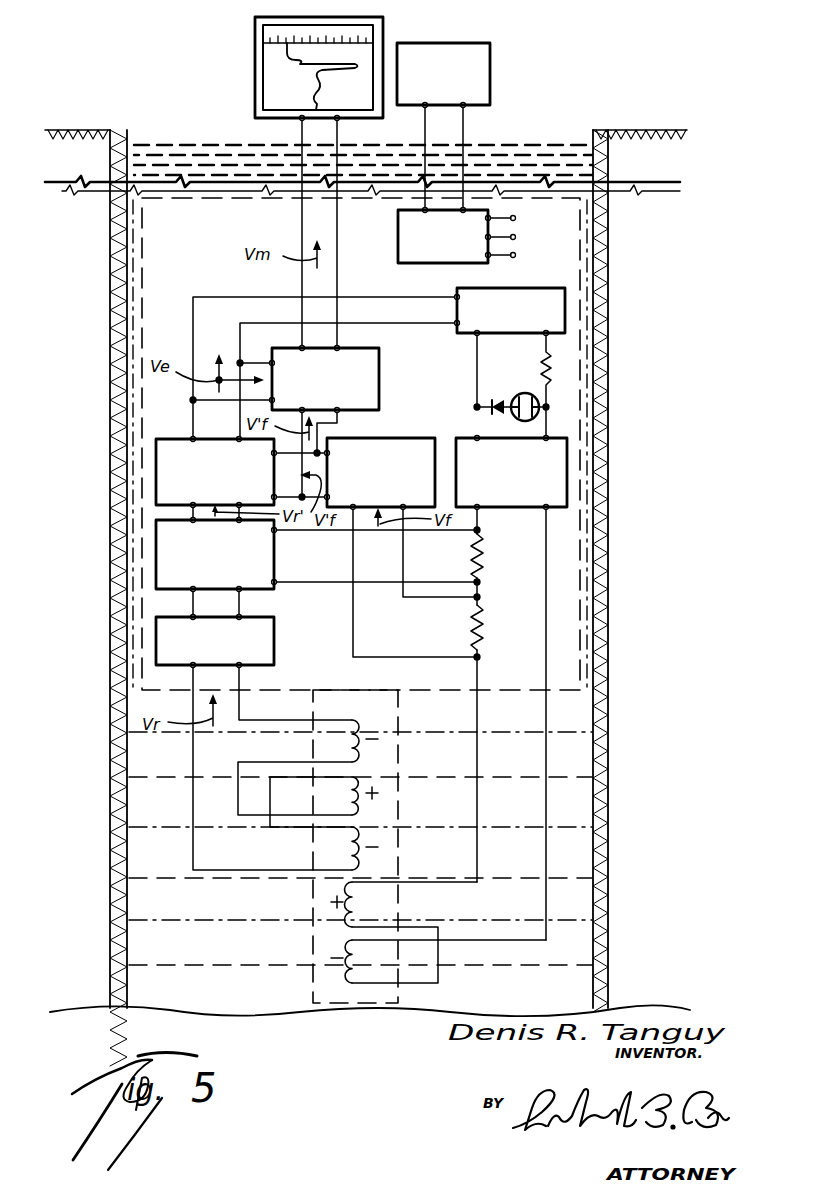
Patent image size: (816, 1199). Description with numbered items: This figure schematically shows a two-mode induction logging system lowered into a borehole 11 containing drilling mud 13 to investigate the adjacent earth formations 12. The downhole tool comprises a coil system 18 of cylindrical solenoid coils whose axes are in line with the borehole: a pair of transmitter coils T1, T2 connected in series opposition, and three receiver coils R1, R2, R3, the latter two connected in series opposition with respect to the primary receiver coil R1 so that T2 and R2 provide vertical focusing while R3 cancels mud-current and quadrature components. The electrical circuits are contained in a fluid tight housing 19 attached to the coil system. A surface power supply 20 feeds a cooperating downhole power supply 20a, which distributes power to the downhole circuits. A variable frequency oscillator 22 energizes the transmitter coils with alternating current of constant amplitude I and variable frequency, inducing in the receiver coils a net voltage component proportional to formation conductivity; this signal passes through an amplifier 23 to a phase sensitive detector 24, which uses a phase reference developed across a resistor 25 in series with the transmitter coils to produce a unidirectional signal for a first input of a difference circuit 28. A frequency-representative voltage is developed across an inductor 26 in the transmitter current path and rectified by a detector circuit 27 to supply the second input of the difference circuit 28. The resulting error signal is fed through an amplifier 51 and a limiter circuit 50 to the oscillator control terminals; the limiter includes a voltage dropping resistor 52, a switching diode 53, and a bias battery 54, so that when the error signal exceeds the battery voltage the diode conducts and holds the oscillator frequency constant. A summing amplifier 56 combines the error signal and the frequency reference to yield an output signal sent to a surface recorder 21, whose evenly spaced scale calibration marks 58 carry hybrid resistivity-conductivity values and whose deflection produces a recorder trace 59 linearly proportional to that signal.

The borehole 11 is at (592, 133).
The earth formations 12 is at (656, 256).
The drilling mud 13 is at (508, 150).
The coil system 18 is at (308, 883).
The fluid tight housing 19 is at (420, 690).
The power supply 20 is at (478, 43).
The cooperating power supply 20a is at (397, 240).
The recorder 21 is at (300, 64).
The variable frequency oscillator 22 is at (492, 509).
The amplifier 23 is at (276, 646).
The phase sensitive detector 24 is at (276, 560).
The resistor 25 is at (480, 546).
The inductor 26 is at (480, 626).
The detector circuit 27 is at (406, 437).
The difference circuit 28 is at (170, 438).
The limiter circuit 50 is at (525, 386).
The amplifier 51 is at (532, 287).
The voltage dropping resistor 52 is at (552, 364).
The switching diode 53 is at (526, 421).
The battery 54 is at (497, 398).
The summing amplifier 56 is at (381, 378).
The scale calibration marks 58 is at (320, 42).
The recorder trace 59 is at (300, 66).
The primary receiver coil R1 is at (364, 808).
The auxiliary receiver coil R2 is at (364, 760).
The auxiliary receiver coil R3 is at (364, 858).
The transmitter coil T1 is at (346, 911).
The transmitter coil T2 is at (346, 970).
The transmitter coil current I is at (547, 712).